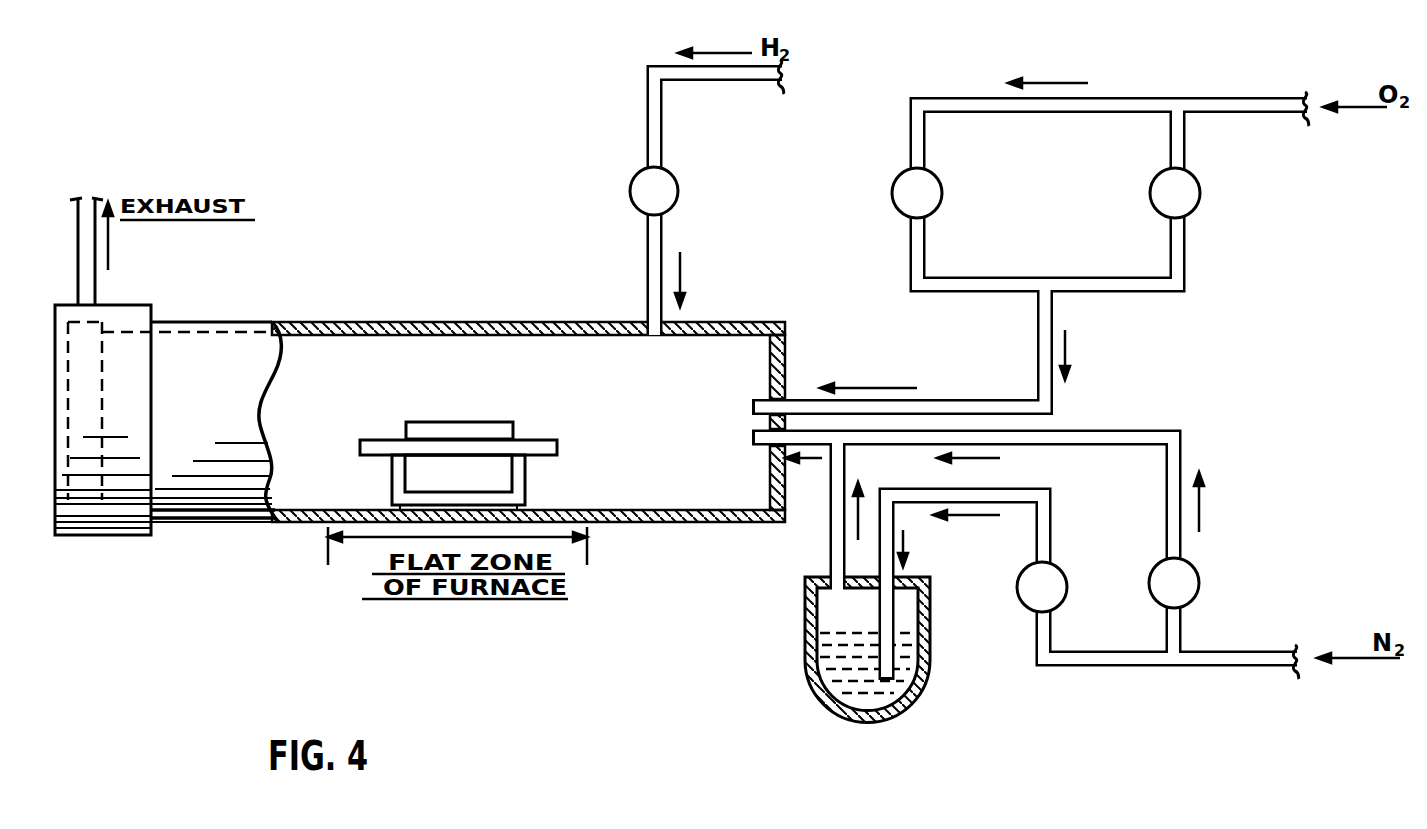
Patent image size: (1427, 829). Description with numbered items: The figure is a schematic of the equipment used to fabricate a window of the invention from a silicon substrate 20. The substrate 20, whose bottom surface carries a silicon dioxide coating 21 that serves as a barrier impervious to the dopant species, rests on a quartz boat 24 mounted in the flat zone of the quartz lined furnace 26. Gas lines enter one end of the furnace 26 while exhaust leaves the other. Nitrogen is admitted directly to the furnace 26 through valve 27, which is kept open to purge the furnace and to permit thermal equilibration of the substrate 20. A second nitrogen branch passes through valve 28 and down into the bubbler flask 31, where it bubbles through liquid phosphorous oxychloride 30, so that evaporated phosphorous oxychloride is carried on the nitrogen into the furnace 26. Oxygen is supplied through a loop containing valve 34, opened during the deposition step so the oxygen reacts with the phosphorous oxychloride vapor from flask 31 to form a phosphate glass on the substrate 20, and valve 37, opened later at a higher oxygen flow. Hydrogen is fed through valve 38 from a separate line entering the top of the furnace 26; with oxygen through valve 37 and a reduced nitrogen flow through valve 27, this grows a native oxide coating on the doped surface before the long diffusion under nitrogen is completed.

The silicon substrate 20 is at (477, 420).
The silicon dioxide coating 21 is at (448, 441).
The quartz boat 24 is at (527, 473).
The furnace 26 is at (460, 320).
The valve 27 is at (1195, 592).
The valve 28 is at (1030, 592).
The liquid phosphorous oxychloride 30 is at (843, 665).
The bubbler flask 31 is at (805, 585).
The valve 34 is at (935, 197).
The valve 37 is at (1198, 195).
The valve 38 is at (643, 170).